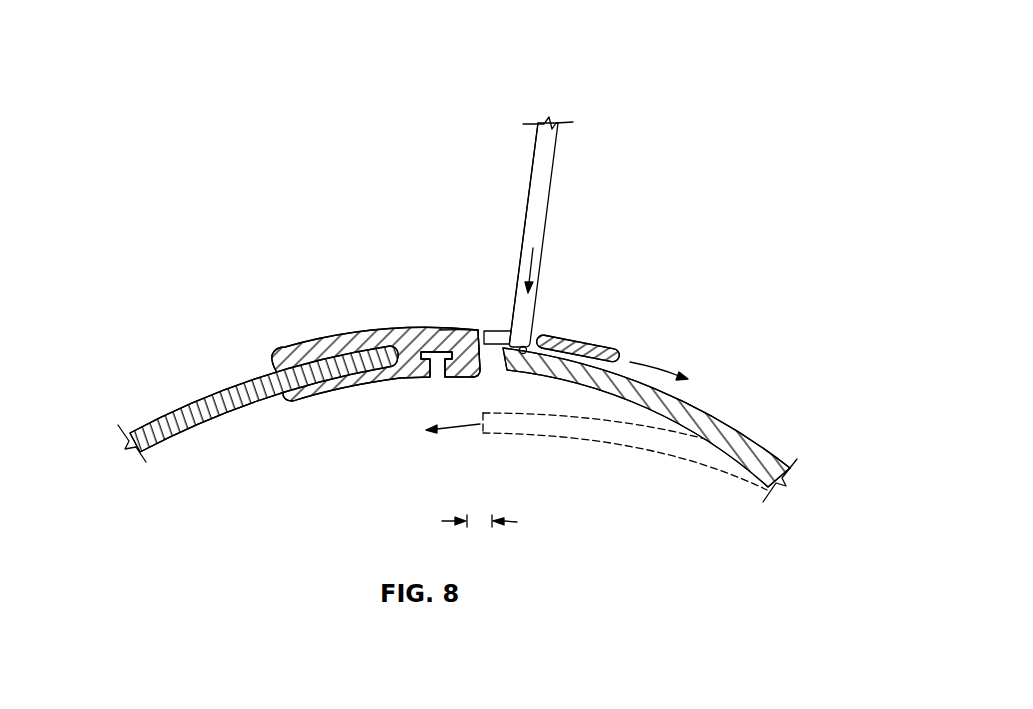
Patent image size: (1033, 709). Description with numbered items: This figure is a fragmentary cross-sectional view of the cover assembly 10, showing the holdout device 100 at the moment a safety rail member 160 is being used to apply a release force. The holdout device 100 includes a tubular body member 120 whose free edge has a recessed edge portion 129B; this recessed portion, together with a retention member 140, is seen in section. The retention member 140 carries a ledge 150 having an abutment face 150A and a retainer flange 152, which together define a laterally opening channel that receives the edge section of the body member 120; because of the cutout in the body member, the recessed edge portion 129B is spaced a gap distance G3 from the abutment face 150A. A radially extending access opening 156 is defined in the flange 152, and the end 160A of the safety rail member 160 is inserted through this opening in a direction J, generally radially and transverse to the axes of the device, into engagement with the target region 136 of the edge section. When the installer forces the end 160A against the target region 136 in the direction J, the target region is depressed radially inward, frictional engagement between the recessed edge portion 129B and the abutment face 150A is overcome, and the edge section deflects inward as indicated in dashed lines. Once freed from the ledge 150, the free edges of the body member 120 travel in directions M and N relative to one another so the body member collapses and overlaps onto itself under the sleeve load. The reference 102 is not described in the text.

The cover assembly 10 is at (223, 172).
The holdout device 100 is at (160, 342).
The optical axis / rod edge 102 is at (497, 247).
The body member 120 is at (160, 458).
The recessed edge portion 129B is at (475, 331).
The target region 136 is at (513, 347).
The retention member 140 is at (312, 330).
The ledge 150 is at (466, 373).
The abutment face 150A is at (478, 357).
The retainer flange 152 is at (612, 339).
The access opening 156 is at (497, 331).
The safety rail member 160 is at (556, 214).
The end of the safety rail member 160A is at (542, 332).
The insertion direction J is at (538, 268).
The direction of free edge travel N is at (663, 370).
The direction of free edge travel M is at (457, 427).
The gap distance G3 is at (501, 524).